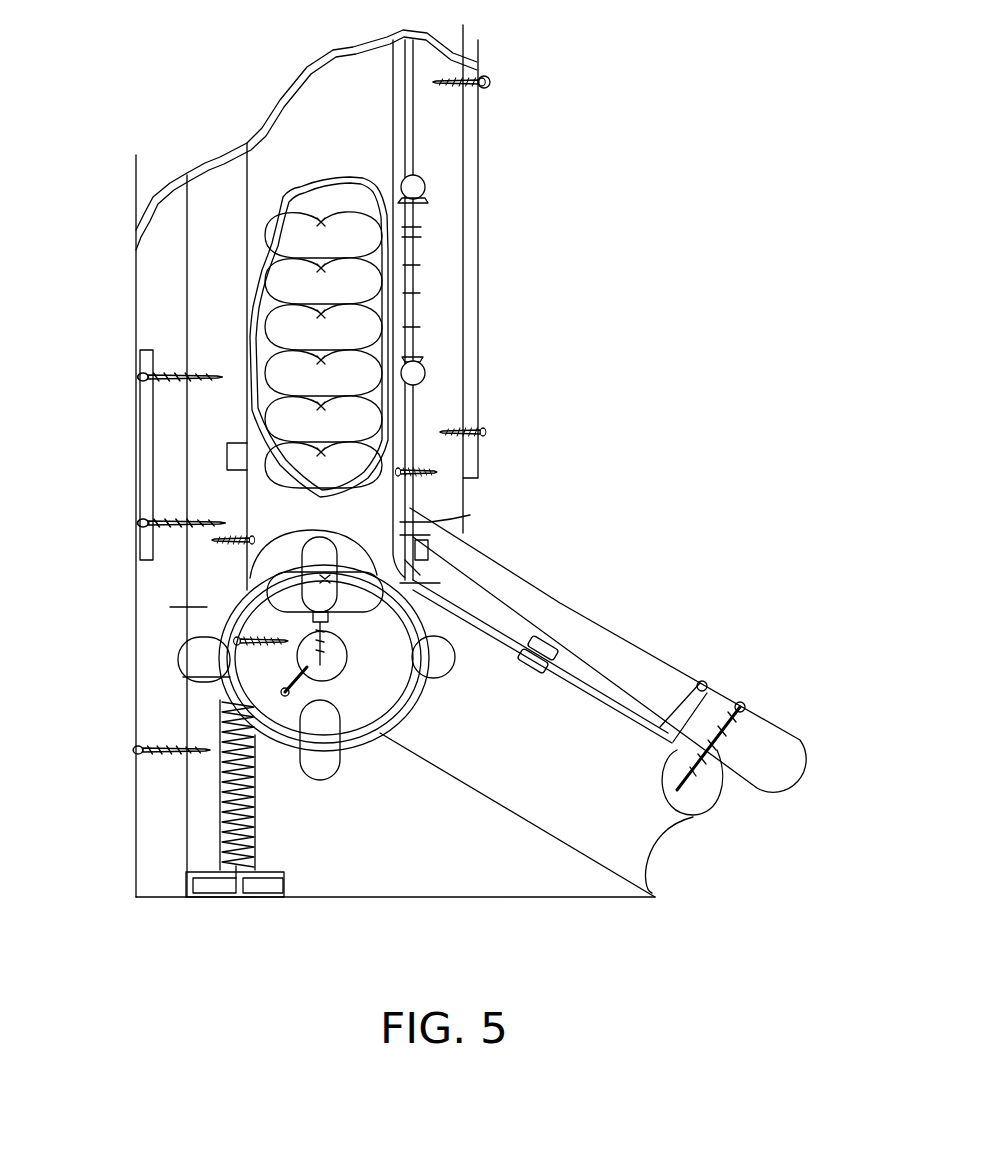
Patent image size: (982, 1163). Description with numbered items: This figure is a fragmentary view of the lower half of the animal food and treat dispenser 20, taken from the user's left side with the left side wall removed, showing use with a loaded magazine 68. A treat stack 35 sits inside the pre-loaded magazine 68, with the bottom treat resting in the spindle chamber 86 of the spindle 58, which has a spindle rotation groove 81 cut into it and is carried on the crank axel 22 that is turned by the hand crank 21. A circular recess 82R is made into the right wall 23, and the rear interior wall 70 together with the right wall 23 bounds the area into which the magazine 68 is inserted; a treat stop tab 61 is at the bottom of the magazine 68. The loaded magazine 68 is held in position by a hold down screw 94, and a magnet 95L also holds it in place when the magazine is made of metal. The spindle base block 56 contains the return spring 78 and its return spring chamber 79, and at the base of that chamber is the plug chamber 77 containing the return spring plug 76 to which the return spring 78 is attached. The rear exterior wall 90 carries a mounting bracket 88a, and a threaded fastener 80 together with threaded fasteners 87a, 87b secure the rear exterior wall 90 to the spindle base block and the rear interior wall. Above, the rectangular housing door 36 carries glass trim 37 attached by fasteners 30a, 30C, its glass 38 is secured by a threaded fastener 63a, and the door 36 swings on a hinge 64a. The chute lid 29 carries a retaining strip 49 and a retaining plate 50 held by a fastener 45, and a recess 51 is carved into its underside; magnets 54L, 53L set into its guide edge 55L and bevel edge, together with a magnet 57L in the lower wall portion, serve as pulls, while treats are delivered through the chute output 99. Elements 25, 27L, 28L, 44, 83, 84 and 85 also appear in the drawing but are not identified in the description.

The animal food and treat dispenser 20 is at (136, 893).
The hand crank 21 is at (190, 700).
The crank axel 22 is at (363, 690).
The right wall 23 is at (398, 227).
The arm end 25 is at (795, 748).
The screw 27L is at (742, 710).
The pivot pin 28L is at (710, 688).
The chute lid 29 is at (650, 655).
The fastener 30a is at (453, 427).
The fastener 30C is at (483, 80).
The treat stack 35 is at (283, 243).
The rectangular housing door 36 is at (432, 65).
The glass trim 37 is at (470, 190).
The glass 38 is at (405, 137).
The screw 44 is at (143, 377).
The fastener 45 is at (423, 507).
The retaining strip 49 is at (423, 587).
The retaining plate 50 is at (400, 522).
The recess 51 is at (400, 583).
The magnet 53L is at (420, 557).
The magnet 54L is at (560, 653).
The guide edge 55L is at (695, 818).
The spindle base block 56 is at (593, 893).
The magnet 57L is at (540, 685).
The spindle 58 is at (387, 690).
The treat stop tab 61 is at (387, 553).
The threaded fastener 63a is at (420, 457).
The hinge 64a is at (420, 310).
The magazine 68 is at (387, 173).
The rear interior wall 70 is at (206, 179).
The return spring plug 76 is at (257, 892).
The plug chamber 77 is at (283, 883).
The return spring 78 is at (257, 843).
The return spring chamber 79 is at (220, 812).
The threaded fastener 80 is at (140, 756).
The spindle rotation groove 81 is at (270, 743).
The circular recess 82R is at (360, 748).
The hub 83 is at (367, 707).
The screw 84 is at (470, 633).
The rotor vane 85 is at (230, 660).
The spindle chamber 86 is at (240, 640).
The threaded fastener 87a is at (143, 523).
The threaded fastener 87b is at (187, 373).
The mounting bracket 88a is at (212, 540).
The rear exterior wall 90 is at (175, 290).
The hold down screw 94 is at (230, 575).
The magnet 95L is at (227, 462).
The chute output 99 is at (655, 865).